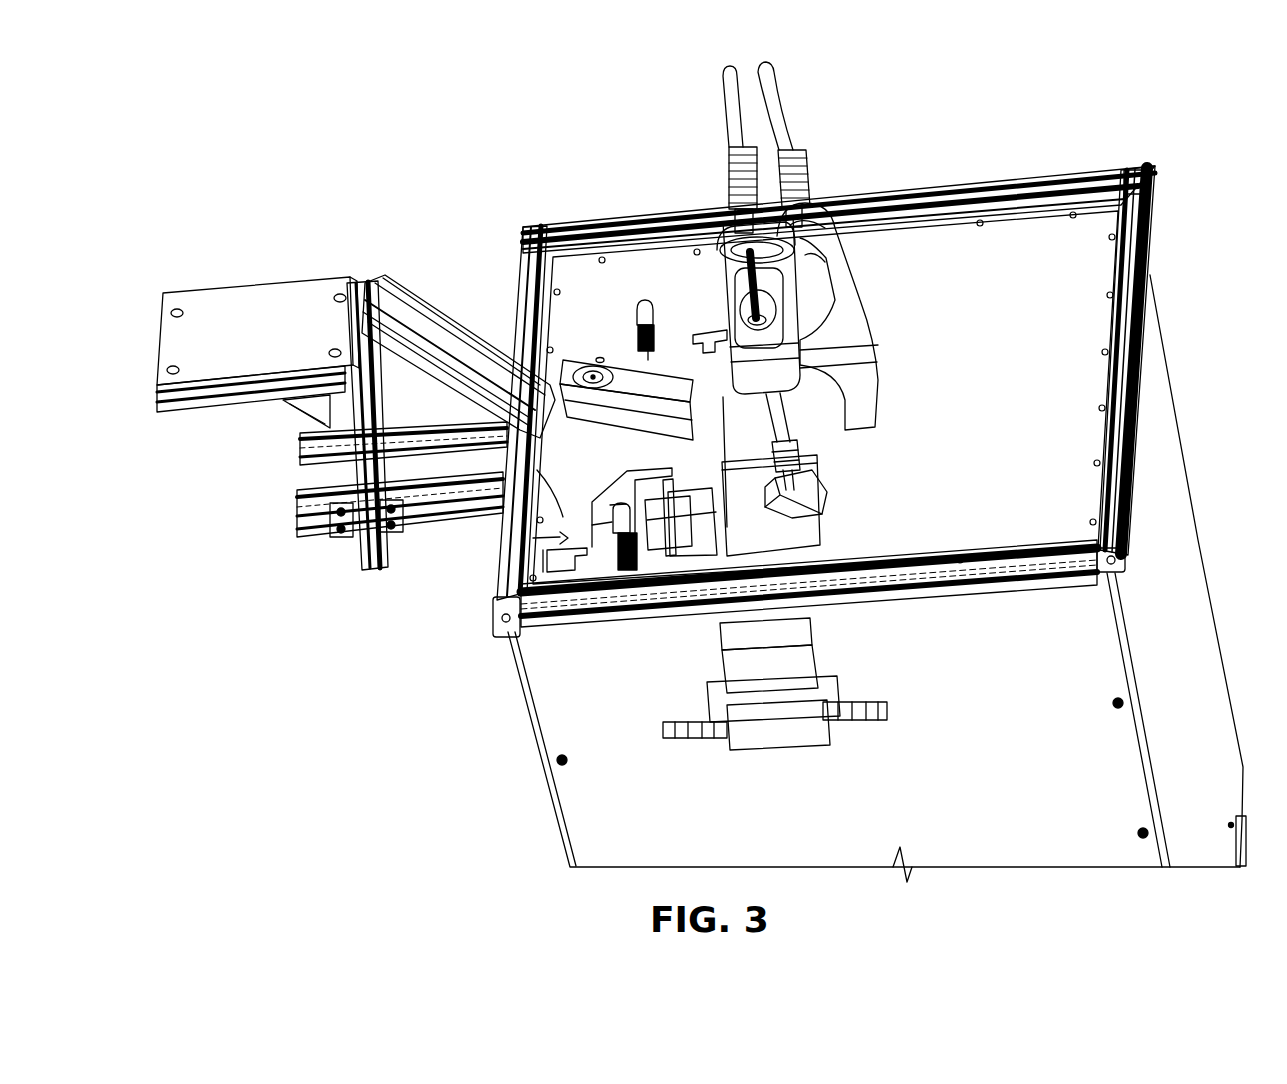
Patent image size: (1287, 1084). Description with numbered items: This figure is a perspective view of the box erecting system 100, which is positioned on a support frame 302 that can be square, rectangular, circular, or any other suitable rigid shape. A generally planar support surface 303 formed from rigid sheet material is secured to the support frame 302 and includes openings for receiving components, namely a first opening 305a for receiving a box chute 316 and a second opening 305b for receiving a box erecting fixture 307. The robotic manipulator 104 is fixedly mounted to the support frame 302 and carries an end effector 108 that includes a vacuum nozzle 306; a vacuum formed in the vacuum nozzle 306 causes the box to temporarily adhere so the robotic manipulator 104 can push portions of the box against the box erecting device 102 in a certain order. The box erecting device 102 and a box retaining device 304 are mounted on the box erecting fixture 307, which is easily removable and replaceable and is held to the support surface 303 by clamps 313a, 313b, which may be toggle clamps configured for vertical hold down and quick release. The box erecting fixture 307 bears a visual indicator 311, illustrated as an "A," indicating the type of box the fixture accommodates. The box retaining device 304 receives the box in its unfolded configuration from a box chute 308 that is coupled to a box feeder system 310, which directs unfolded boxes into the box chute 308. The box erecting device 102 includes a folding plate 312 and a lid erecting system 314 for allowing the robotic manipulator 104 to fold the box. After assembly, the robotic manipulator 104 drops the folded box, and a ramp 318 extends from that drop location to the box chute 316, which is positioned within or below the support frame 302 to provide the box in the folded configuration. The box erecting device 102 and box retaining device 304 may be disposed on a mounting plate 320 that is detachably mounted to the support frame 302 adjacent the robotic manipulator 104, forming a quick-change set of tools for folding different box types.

The box erecting system 100 is at (1160, 123).
The box erecting device 102 is at (510, 575).
The robotic manipulator 104 is at (833, 243).
The end effector 108 is at (810, 460).
The support frame 302 is at (1152, 240).
The support surface 303 is at (1033, 238).
The box retaining device 304 is at (657, 397).
The first opening 305a is at (760, 550).
The second opening 305b is at (590, 357).
The vacuum nozzle 306 is at (820, 507).
The box erecting fixture 307 is at (502, 533).
The box chute 308 is at (417, 330).
The box feeder system 310 is at (267, 303).
The visual indicator 311 is at (600, 357).
The folding plate 312 is at (620, 497).
The clamp 313a is at (643, 293).
The clamp 313b is at (620, 540).
The lid erecting system 314 is at (687, 517).
The box chute 316 is at (733, 687).
The ramp 318 is at (757, 497).
The mounting plate 320 is at (460, 437).